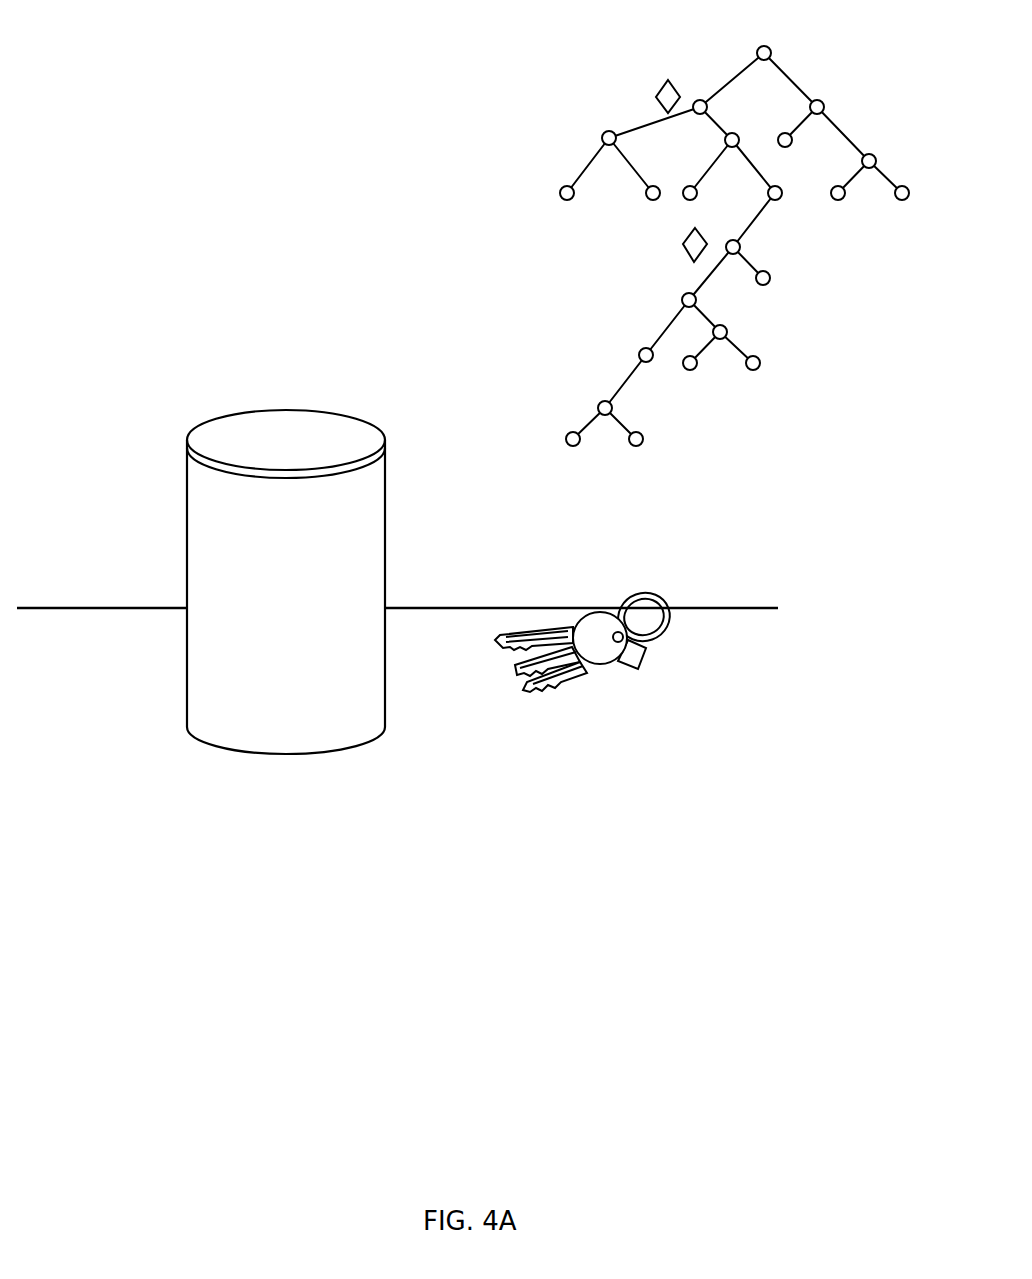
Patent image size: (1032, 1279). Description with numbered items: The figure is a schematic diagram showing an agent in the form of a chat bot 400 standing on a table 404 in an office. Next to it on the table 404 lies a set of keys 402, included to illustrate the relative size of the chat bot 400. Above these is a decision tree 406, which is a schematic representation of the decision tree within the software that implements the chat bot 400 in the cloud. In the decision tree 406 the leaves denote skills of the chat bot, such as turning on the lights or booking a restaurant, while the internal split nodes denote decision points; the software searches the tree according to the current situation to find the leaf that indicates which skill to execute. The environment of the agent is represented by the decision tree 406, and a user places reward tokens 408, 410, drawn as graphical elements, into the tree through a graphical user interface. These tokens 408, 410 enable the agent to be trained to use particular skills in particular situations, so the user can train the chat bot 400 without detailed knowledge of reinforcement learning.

The chat bot 400 is at (286, 582).
The set of keys 402 is at (568, 687).
The table 404 is at (747, 608).
The decision tree 406 is at (850, 70).
The token 408 is at (655, 97).
The token 410 is at (683, 244).